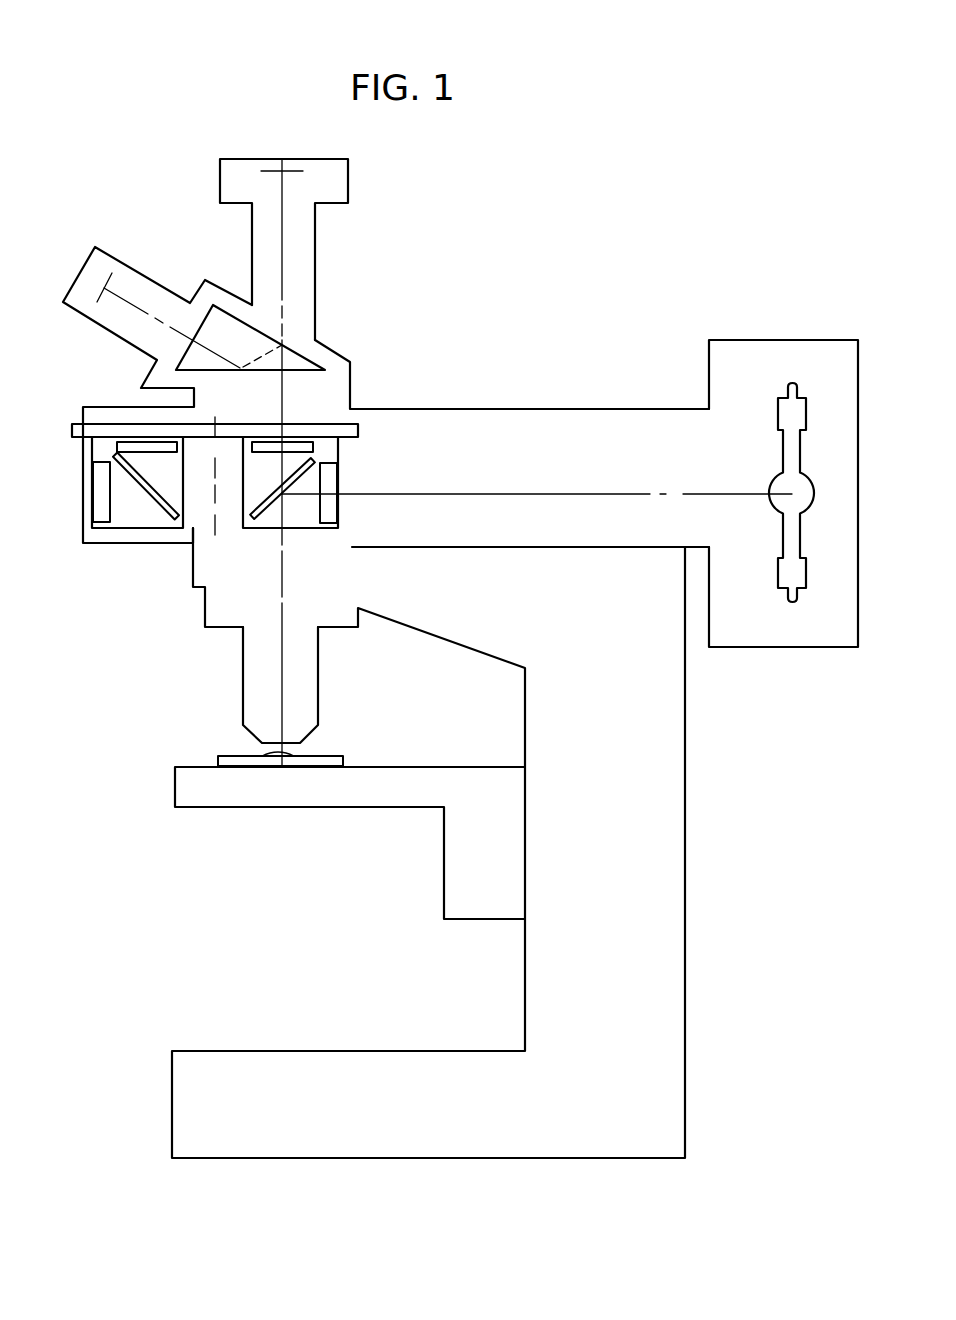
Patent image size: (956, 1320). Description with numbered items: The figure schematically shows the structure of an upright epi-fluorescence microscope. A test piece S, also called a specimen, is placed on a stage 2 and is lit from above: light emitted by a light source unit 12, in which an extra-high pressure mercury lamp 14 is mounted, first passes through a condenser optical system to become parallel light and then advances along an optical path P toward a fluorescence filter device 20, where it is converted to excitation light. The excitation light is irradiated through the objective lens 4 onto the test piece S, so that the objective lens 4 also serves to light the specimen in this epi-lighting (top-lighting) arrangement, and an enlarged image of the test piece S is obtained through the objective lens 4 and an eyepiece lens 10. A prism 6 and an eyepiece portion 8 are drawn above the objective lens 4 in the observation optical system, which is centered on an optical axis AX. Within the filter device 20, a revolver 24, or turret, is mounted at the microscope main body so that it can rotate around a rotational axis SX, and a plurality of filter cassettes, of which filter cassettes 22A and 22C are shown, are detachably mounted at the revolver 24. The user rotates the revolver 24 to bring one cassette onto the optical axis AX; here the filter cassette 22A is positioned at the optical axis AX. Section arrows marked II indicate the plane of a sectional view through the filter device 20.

The stage 2 is at (175, 780).
The objective lens 4 is at (243, 678).
The prism 6 is at (311, 357).
The eyepiece 8 is at (348, 178).
The eyepiece lens 10 is at (136, 270).
The light source unit 12 is at (736, 340).
The extra-high pressure mercury lamp 14 is at (782, 538).
The fluorescence filter device 20 is at (98, 553).
The filter cassette 22A is at (343, 455).
The filter cassette 22C is at (83, 452).
The revolver 24 is at (315, 424).
The test piece S is at (263, 753).
The rotational axis SX is at (217, 525).
The optical axis AX is at (283, 668).
The optical path P is at (533, 494).
The section line II- II is at (33, 363).